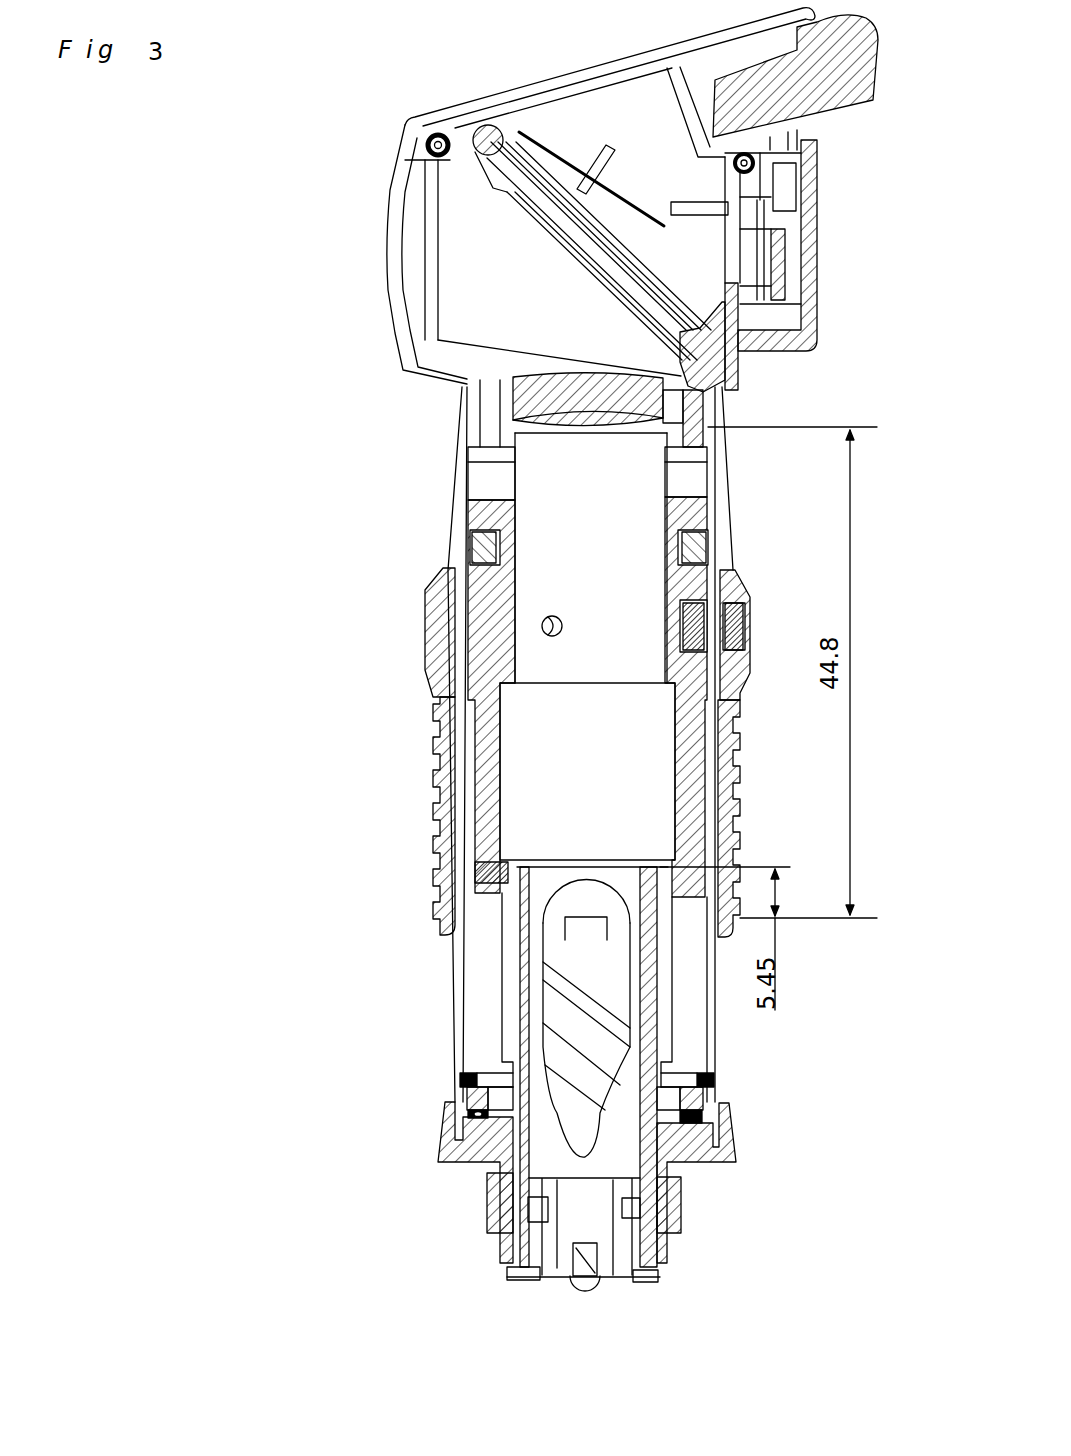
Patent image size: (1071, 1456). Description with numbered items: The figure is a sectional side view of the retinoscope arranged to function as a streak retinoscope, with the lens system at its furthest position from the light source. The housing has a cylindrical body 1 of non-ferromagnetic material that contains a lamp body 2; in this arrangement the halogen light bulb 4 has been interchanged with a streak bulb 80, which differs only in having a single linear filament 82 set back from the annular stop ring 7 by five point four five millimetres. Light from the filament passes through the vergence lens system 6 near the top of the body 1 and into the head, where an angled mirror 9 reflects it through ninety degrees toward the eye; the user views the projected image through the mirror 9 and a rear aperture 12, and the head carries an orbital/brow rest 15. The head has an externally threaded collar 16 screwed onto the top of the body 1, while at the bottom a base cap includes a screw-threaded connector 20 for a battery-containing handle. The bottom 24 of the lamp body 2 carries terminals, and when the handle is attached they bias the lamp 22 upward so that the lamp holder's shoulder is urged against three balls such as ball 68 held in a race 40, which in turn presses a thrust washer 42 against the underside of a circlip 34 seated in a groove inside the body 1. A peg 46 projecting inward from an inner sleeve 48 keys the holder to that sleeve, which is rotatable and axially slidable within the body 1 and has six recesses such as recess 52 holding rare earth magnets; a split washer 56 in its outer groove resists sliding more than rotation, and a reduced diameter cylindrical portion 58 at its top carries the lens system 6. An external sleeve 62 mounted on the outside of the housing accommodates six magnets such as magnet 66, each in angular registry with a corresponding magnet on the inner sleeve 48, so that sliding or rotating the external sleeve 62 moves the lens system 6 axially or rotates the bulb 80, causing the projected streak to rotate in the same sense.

The cylindrical body 1 is at (460, 428).
The lamp body 2 is at (488, 1188).
The halogen light bulb 4 is at (450, 118).
The vergence lens system 6 is at (740, 380).
The annular stop ring 7 is at (590, 862).
The mirror 9 is at (555, 225).
The rear aperture 12 is at (820, 268).
The orbital/brow rest 15 is at (873, 101).
The collar 16 is at (705, 412).
The screw-threaded connector 20 is at (488, 1227).
The lamp 22 is at (632, 1210).
The bottom of the lamp body 24 is at (580, 1300).
The circlip 34 is at (463, 1077).
The race 40 is at (705, 1118).
The thrust washer 42 is at (712, 1082).
The peg 46 is at (485, 866).
The inner sleeve 48 is at (492, 622).
The recess 52 is at (700, 603).
The split washer 56 is at (486, 545).
The reduced diameter cylindrical portion 58 is at (510, 480).
The external sleeve 62 is at (440, 740).
The magnet 66 is at (756, 640).
The ball 68 is at (447, 1105).
The streak bulb 80 is at (537, 943).
The linear filament 82 is at (545, 905).